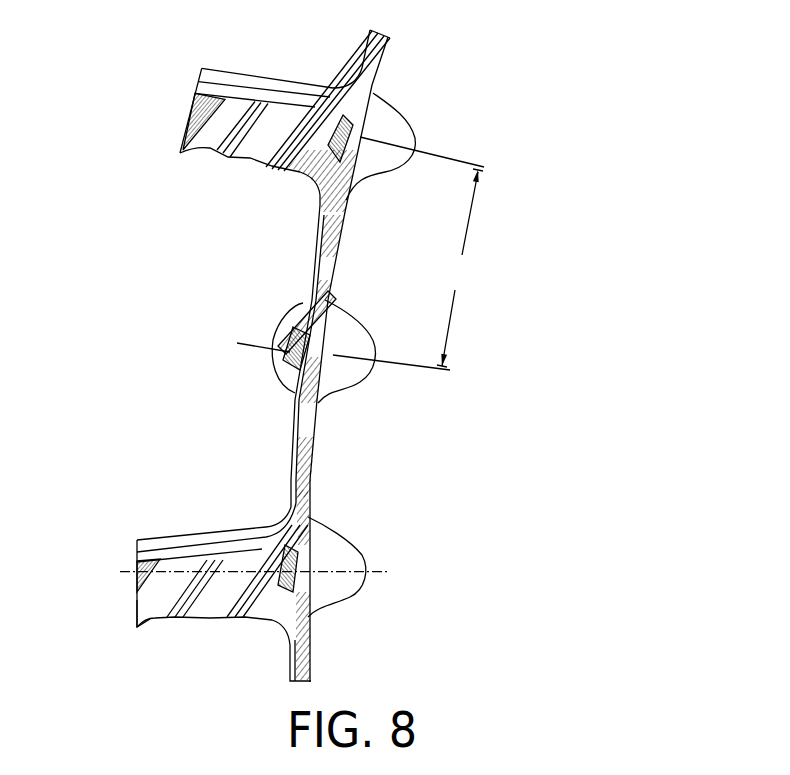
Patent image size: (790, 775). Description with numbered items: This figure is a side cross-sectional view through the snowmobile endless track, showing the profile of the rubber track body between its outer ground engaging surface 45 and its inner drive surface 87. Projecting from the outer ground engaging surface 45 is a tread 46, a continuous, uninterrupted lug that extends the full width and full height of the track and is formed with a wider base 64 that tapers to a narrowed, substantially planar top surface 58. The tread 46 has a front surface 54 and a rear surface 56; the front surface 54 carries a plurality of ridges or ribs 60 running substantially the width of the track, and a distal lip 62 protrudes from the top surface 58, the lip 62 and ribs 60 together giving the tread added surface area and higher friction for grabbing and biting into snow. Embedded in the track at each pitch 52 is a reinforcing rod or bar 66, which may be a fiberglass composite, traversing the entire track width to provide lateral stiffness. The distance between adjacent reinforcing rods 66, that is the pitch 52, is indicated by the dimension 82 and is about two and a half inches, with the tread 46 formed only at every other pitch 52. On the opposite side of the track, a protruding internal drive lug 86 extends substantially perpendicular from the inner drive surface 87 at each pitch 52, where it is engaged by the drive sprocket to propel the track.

The outer ground engaging surface 45 is at (292, 440).
The tread 46 is at (135, 578).
The pitch 52 is at (372, 97).
The front surface 54 is at (230, 153).
The rear surface 56 is at (243, 87).
The top surface 58 is at (188, 118).
The ribs 60 is at (277, 173).
The distal lip 62 is at (139, 628).
The base 64 is at (311, 641).
The reinforcing rod 66 is at (310, 330).
The pitch distance 82 is at (360, 253).
The internal drive lug 86 is at (348, 562).
The inner drive surface 87 is at (316, 448).